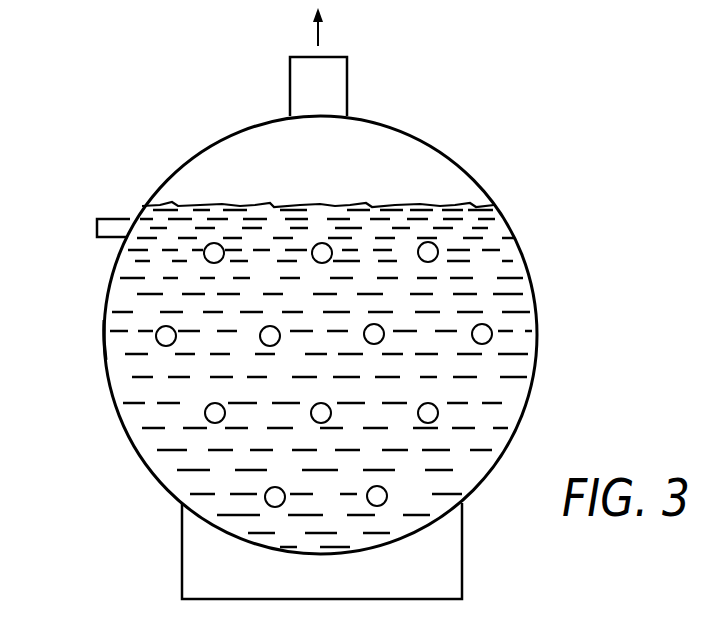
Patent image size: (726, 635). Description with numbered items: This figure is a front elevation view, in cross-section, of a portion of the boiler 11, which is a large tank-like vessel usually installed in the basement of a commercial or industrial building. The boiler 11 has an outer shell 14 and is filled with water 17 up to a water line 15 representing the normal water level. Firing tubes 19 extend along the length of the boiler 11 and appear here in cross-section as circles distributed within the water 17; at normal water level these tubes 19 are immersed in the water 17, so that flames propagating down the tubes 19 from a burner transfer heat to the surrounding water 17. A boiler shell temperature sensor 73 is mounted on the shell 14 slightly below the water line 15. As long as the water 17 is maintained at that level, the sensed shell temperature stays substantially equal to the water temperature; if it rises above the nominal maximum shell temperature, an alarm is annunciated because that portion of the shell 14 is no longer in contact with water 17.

The boiler 11 is at (535, 292).
The outer shell 14 is at (104, 332).
The water line 15 is at (478, 206).
The water 17 is at (470, 275).
The firing tubes 19 is at (387, 495).
The boiler shell temperature sensor 73 is at (97, 225).